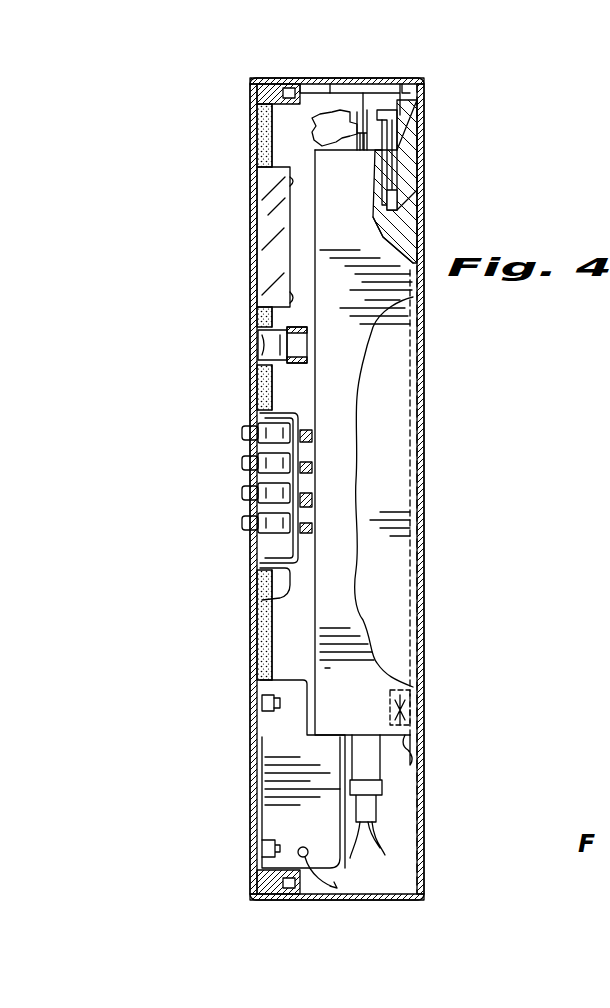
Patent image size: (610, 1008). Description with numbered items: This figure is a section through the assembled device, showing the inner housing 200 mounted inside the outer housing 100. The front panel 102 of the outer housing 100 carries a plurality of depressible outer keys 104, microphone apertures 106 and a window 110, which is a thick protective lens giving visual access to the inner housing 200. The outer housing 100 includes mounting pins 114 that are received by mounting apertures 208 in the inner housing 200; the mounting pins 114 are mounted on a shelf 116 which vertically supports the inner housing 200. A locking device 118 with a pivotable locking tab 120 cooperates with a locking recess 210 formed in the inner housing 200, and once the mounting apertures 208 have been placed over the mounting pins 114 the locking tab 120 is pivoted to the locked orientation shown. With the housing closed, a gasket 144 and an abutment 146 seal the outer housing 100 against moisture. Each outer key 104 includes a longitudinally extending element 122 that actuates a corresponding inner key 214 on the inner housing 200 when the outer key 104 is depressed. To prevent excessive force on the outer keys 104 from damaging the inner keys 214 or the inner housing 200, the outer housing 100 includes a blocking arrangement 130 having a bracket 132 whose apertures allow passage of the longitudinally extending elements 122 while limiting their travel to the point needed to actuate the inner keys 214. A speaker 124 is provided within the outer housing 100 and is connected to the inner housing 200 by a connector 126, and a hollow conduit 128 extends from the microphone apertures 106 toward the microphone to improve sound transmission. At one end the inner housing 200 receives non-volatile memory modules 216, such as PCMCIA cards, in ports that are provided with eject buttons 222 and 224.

The outer housing 100 is at (408, 587).
The front panel 102 is at (252, 713).
The outer keys 104 is at (243, 470).
The microphone apertures 106 is at (257, 345).
The window 110 is at (265, 215).
The mounting pins 114 is at (410, 723).
The shelf 116 is at (417, 753).
The locking device 118 is at (323, 83).
The locking tab 120 is at (390, 167).
The longitudinally extending element 122 is at (303, 433).
The speaker 124 is at (340, 852).
The connector 126 is at (380, 790).
The hollow conduit 128 is at (305, 330).
The blocking arrangement 130 is at (307, 405).
The bracket 132 is at (290, 572).
The gasket 144 is at (250, 890).
The abutment 146 is at (278, 883).
The inner housing 200 is at (340, 697).
The mounting apertures 208 is at (430, 697).
The locking recess 210 is at (390, 193).
The inner keys 214 is at (313, 497).
The memory modules 216 is at (402, 93).
The eject button 222 is at (373, 133).
The eject button 224 is at (366, 135).